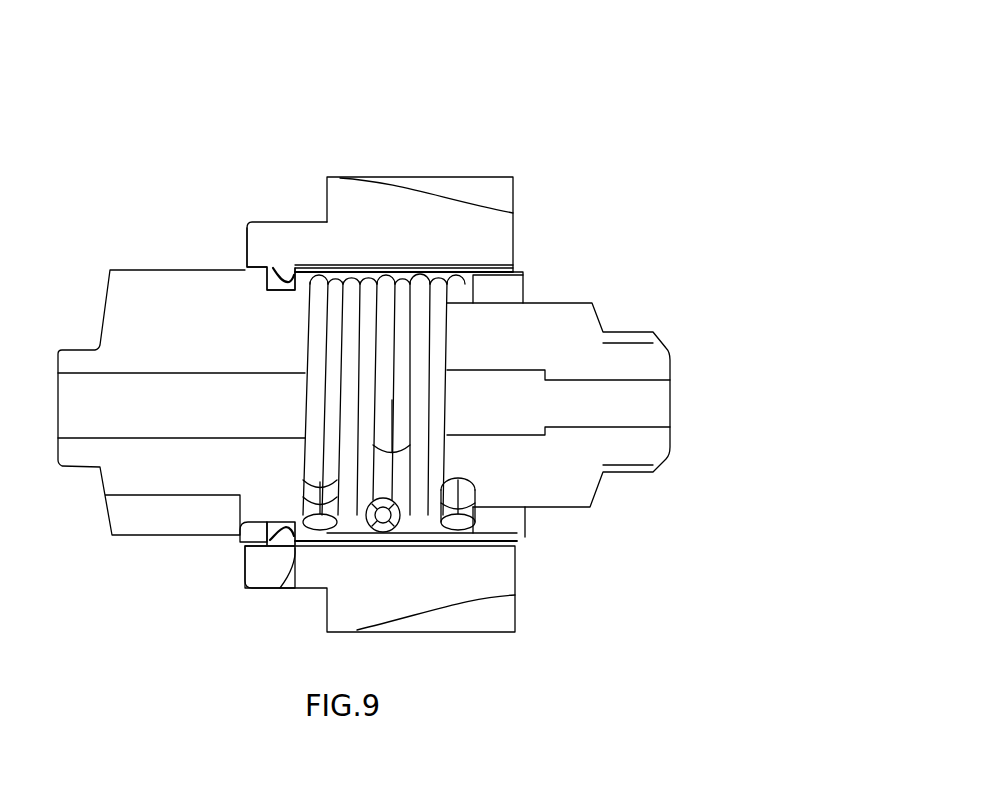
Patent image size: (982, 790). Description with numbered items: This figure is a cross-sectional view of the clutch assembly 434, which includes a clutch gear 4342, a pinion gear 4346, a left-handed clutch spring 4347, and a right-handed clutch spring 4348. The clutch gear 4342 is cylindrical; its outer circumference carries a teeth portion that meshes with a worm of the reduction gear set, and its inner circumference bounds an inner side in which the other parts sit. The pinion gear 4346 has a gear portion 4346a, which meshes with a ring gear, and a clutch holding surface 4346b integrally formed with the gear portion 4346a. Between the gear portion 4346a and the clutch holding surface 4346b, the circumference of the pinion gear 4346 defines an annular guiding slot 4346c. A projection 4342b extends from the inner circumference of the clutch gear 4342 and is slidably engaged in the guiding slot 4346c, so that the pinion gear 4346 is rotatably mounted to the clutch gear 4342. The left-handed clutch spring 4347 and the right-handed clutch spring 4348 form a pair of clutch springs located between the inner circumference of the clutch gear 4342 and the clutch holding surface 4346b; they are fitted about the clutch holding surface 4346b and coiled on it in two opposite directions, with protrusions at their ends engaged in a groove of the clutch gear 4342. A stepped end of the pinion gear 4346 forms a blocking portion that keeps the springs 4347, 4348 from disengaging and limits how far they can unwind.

The clutch assembly 434 is at (668, 48).
The clutch gear 4342 is at (487, 174).
The projection 4342b is at (279, 590).
The pinion gear 4346 is at (107, 256).
The gear portion 4346a is at (125, 536).
The clutch holding surface 4346b is at (541, 508).
The guiding slot 4346c is at (239, 537).
The left-handed clutch spring 4347 is at (431, 262).
The right-handed clutch spring 4348 is at (327, 280).